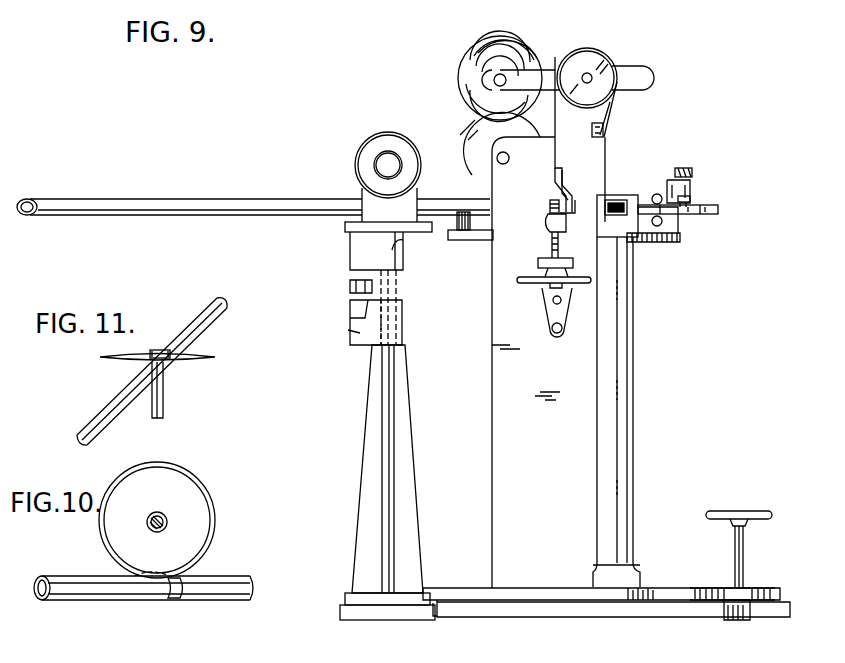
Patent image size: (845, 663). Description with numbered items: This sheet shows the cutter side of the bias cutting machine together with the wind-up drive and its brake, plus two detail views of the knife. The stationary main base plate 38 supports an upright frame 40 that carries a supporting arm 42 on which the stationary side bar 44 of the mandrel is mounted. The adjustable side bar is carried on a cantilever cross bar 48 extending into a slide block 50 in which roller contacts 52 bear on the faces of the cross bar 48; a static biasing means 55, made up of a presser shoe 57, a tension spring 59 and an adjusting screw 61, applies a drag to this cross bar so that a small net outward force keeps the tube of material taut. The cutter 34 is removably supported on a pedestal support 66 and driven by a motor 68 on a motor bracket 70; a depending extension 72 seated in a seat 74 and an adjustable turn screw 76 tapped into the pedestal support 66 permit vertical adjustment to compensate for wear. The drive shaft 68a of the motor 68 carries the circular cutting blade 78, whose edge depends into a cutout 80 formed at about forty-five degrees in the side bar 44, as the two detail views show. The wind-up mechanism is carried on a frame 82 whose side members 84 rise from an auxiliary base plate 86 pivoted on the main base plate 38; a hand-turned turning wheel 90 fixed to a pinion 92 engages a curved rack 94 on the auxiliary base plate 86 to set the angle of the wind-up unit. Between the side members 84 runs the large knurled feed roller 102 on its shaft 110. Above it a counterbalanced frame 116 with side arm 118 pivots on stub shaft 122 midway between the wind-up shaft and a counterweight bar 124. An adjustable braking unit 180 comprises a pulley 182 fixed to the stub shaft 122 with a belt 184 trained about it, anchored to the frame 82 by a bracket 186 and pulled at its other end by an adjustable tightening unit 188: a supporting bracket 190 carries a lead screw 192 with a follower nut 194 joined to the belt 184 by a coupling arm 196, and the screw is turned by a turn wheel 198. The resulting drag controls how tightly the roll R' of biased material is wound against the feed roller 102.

In FIG. 9, the cutter 34 is at (365, 143).
In FIG. 9, the main base plate 38 is at (478, 620).
In FIG. 9, the upright frame 40 is at (633, 440).
In FIG. 9, the supporting arm 42 is at (470, 242).
In FIG. 9, the stationary side bar 44 is at (246, 216).
In FIG. 11, the stationary side bar 44 is at (104, 408).
In FIG. 10, the stationary side bar 44 is at (88, 600).
In FIG. 9, the cross bar 48 is at (719, 209).
In FIG. 9, the slide block 50 is at (680, 229).
In FIG. 9, the roller contacts 52 is at (614, 198).
In FIG. 9, the static biasing means 55 is at (692, 172).
In FIG. 9, the presser shoe 57 is at (688, 206).
In FIG. 9, the tension spring 59 is at (690, 197).
In FIG. 9, the adjusting screw 61 is at (683, 168).
In FIG. 9, the pedestal support 66 is at (372, 440).
In FIG. 9, the motor 68 is at (396, 140).
In FIG. 11, the drive shaft 68a is at (165, 405).
In FIG. 10, the drive shaft 68a is at (165, 520).
In FIG. 9, the motor bracket 70 is at (372, 248).
In FIG. 9, the depending extension 72 is at (397, 294).
In FIG. 9, the seat 74 is at (366, 326).
In FIG. 9, the adjustable turn screw 76 is at (349, 287).
In FIG. 11, the circular cutting blade 78 is at (205, 356).
In FIG. 10, the circular cutting blade 78 is at (185, 487).
In FIG. 11, the cutout 80 is at (157, 350).
In FIG. 10, the cutout 80 is at (172, 598).
In FIG. 9, the frame 82 is at (498, 486).
In FIG. 9, the side members 84 is at (507, 438).
In FIG. 9, the auxiliary base plate 86 is at (516, 588).
In FIG. 9, the turning wheel 90 is at (724, 510).
In FIG. 9, the pinion 92 is at (747, 584).
In FIG. 9, the curved rack 94 is at (712, 590).
In FIG. 9, the feed roller 102 is at (478, 137).
In FIG. 9, the shaft 110 is at (509, 157).
In FIG. 9, the counterbalanced frame 116 is at (659, 65).
In FIG. 9, the side arm 118 is at (537, 70).
In FIG. 9, the stub shaft 122 is at (586, 73).
In FIG. 9, the counterweight bar 124 is at (656, 78).
In FIG. 9, the adjustable braking unit 180 is at (618, 54).
In FIG. 9, the pulley 182 is at (600, 42).
In FIG. 9, the belt 184 is at (612, 110).
In FIG. 9, the bracket 186 is at (606, 132).
In FIG. 9, the adjustable tightening unit 188 is at (540, 234).
In FIG. 9, the supporting bracket 190 is at (553, 322).
In FIG. 9, the lead screw 192 is at (549, 205).
In FIG. 9, the follower nut 194 is at (576, 200).
In FIG. 9, the coupling arm 196 is at (566, 190).
In FIG. 9, the turn wheel 198 is at (577, 285).
In FIG. 9, the roll of biased material R' is at (456, 59).